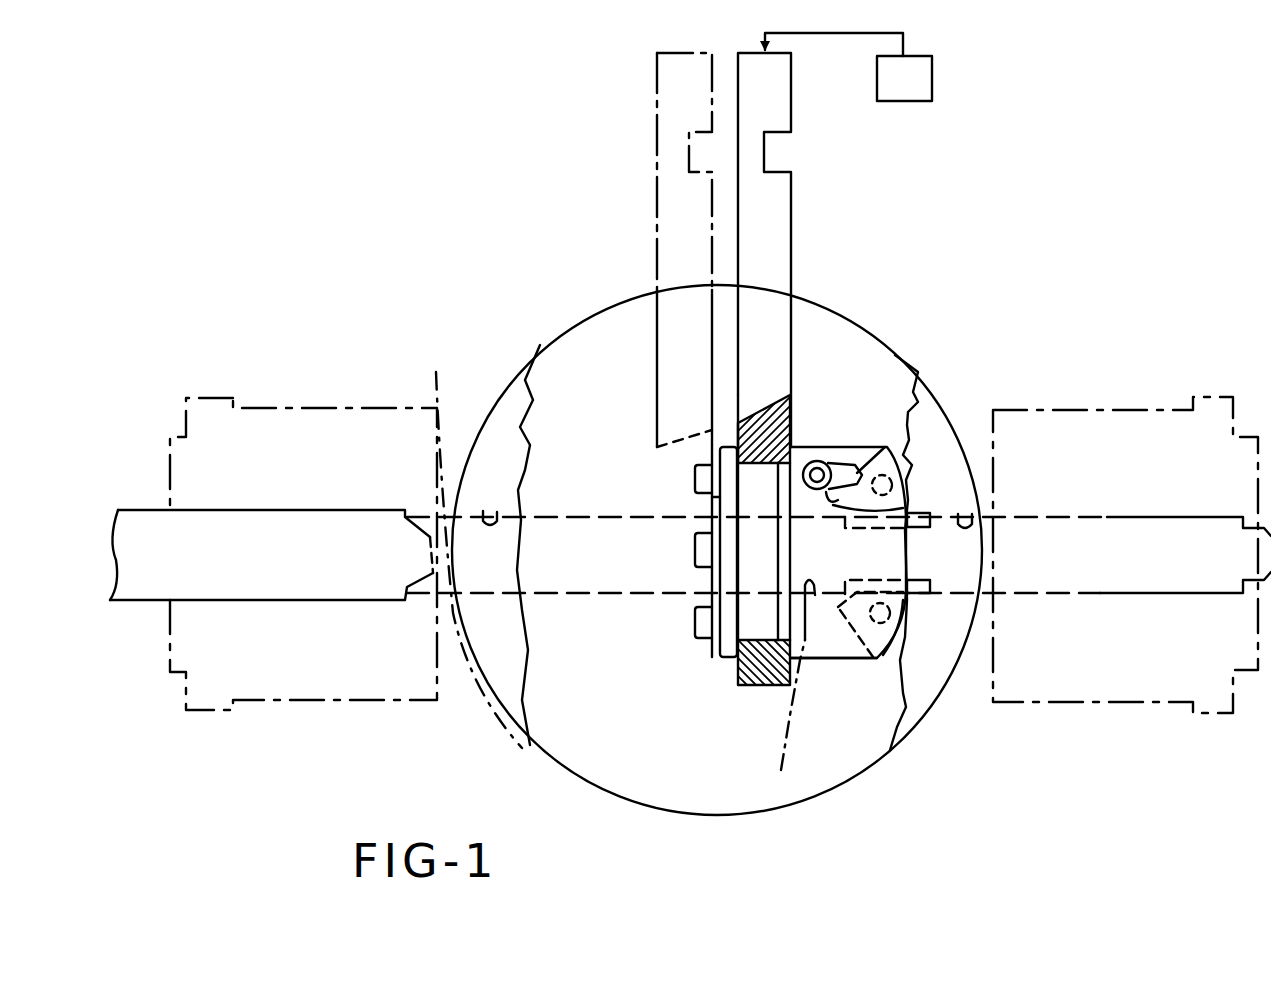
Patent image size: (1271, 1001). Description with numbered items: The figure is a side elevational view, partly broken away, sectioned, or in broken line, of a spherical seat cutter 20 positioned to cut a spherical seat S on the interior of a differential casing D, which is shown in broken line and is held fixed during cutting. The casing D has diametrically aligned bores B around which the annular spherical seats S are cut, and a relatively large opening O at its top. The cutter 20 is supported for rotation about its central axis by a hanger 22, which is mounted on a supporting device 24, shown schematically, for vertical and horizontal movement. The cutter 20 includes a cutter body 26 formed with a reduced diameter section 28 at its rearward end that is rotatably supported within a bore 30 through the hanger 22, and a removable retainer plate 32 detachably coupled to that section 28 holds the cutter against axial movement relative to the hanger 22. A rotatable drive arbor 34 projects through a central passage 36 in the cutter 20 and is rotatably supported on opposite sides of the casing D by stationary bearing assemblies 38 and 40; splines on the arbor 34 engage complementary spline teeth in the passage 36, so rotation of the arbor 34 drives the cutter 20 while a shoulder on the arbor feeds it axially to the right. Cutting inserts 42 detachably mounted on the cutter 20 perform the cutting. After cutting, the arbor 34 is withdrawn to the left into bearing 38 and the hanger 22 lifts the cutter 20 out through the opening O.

The spherical seat cutter 20 is at (833, 442).
The hanger 22 is at (800, 250).
The supporting device 24 is at (940, 90).
The cutter body 26 is at (845, 660).
The reduced diameter section 28 is at (753, 618).
The bore 30 is at (733, 478).
The retainer plate 32 is at (707, 498).
The drive arbor 34 is at (1110, 517).
The central passage 36 is at (786, 693).
The stationary bearing assembly 38 is at (345, 703).
The stationary bearing assembly 40 is at (1107, 703).
The cutting inserts 42 is at (890, 457).
The opening O is at (583, 340).
The bores B is at (483, 515).
The spherical seat S is at (915, 478).
The differential casing D is at (925, 680).